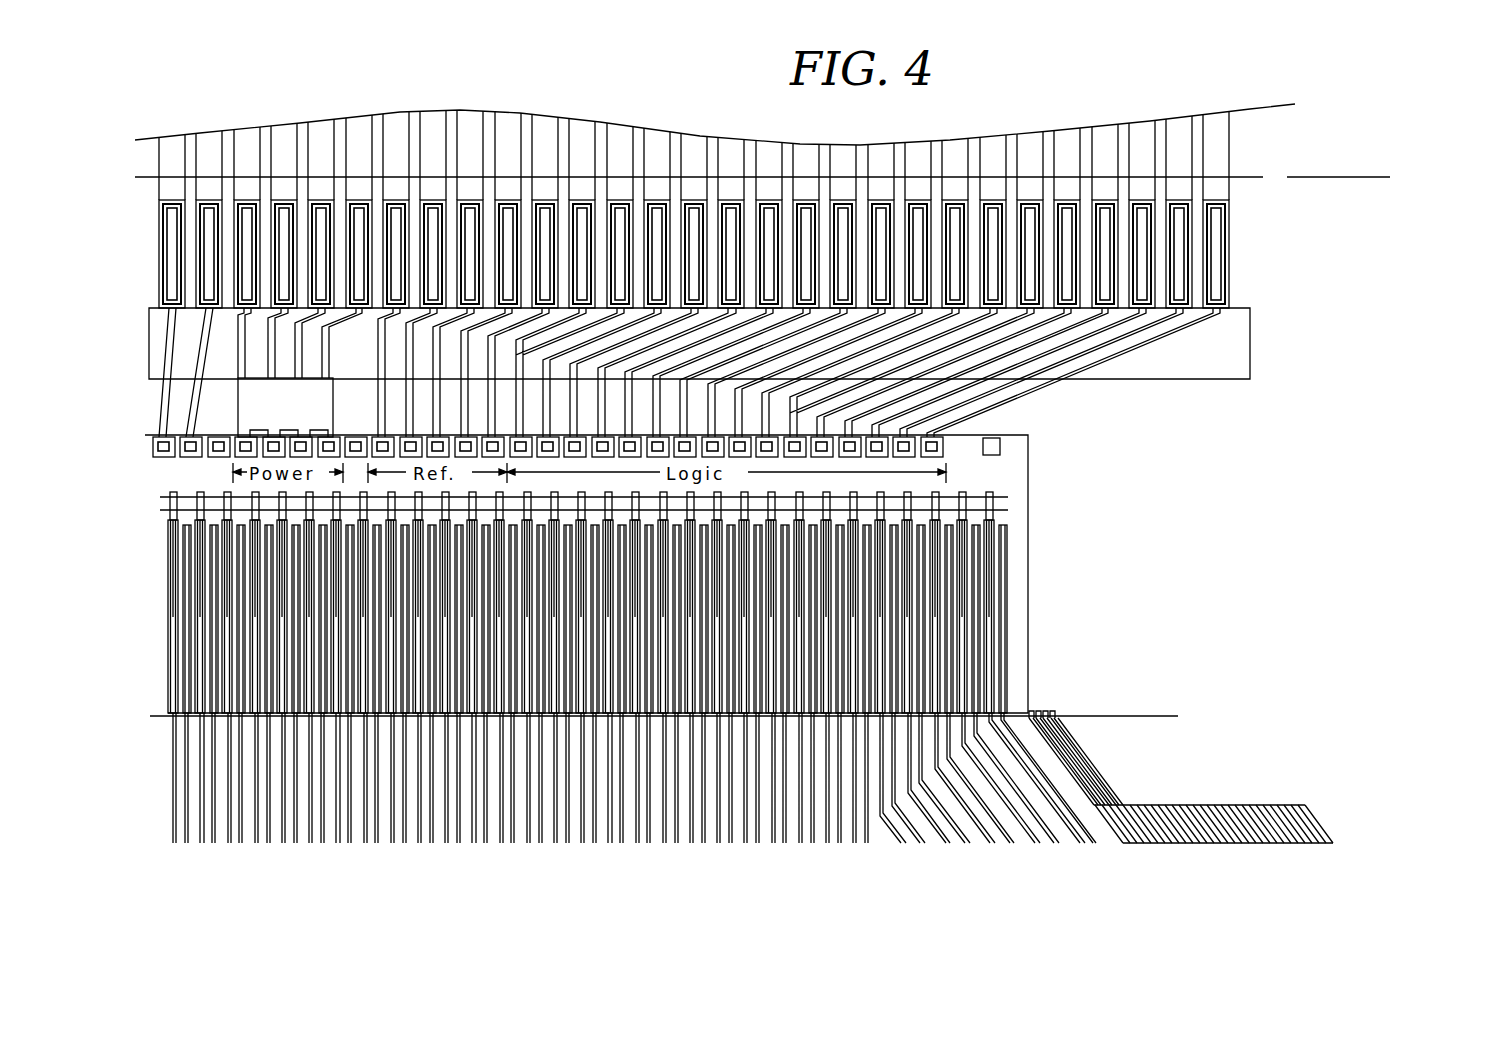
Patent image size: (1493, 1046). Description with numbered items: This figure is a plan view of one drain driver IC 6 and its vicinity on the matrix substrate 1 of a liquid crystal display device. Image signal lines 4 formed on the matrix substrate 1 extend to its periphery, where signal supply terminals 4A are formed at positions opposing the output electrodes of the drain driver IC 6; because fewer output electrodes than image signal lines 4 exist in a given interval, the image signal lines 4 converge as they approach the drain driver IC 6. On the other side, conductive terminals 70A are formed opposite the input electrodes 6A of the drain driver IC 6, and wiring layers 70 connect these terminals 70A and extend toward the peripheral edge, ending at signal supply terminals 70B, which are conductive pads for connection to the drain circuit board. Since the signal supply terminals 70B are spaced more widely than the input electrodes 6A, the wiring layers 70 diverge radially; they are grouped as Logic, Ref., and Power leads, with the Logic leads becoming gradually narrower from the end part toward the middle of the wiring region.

The matrix substrate 1 is at (1342, 177).
The signal supply terminals 70B is at (1217, 262).
The wiring layers 70 is at (1047, 392).
The conductive terminals 70A is at (950, 437).
The input electrodes 6A is at (950, 450).
The drain driver IC 6 is at (1028, 548).
The signal supply terminals 4A is at (1010, 693).
The image signal lines 4 is at (1085, 850).